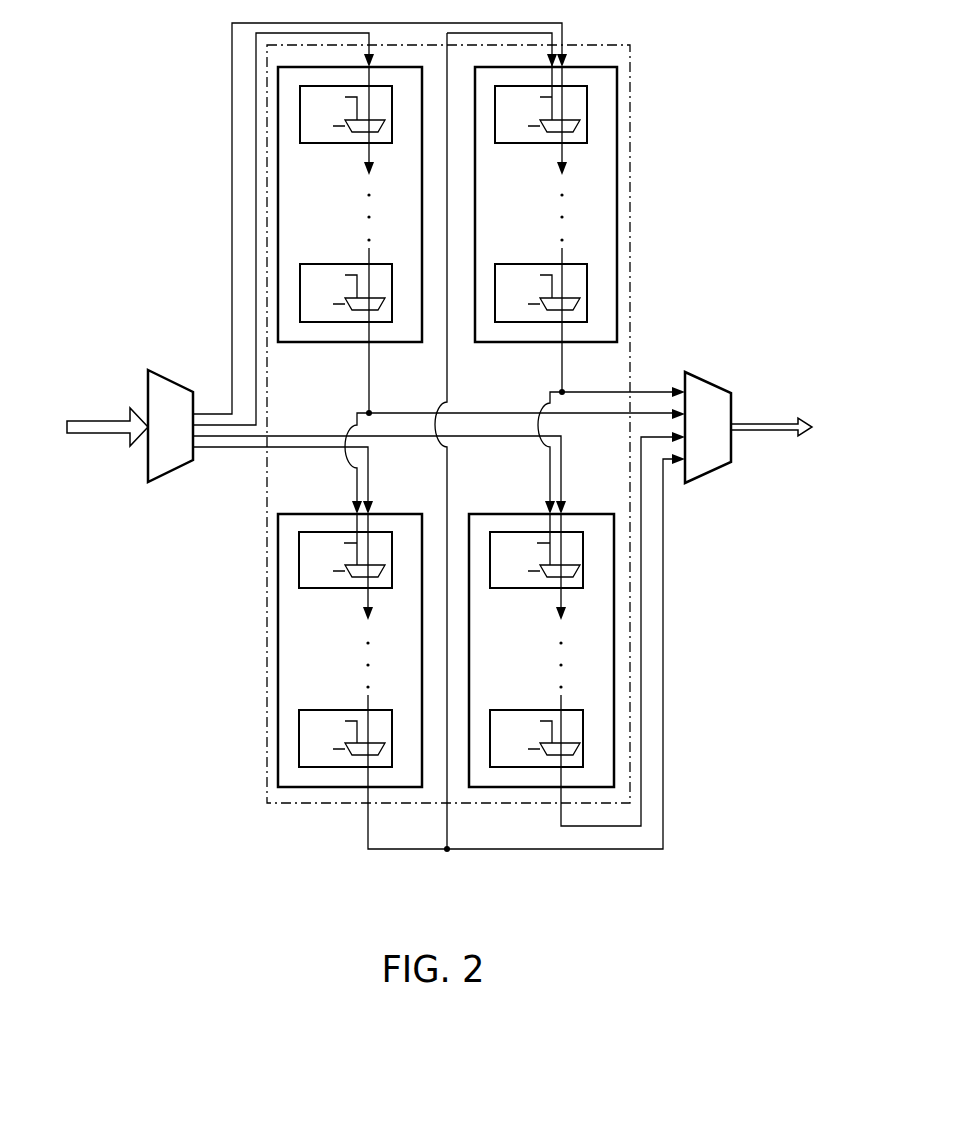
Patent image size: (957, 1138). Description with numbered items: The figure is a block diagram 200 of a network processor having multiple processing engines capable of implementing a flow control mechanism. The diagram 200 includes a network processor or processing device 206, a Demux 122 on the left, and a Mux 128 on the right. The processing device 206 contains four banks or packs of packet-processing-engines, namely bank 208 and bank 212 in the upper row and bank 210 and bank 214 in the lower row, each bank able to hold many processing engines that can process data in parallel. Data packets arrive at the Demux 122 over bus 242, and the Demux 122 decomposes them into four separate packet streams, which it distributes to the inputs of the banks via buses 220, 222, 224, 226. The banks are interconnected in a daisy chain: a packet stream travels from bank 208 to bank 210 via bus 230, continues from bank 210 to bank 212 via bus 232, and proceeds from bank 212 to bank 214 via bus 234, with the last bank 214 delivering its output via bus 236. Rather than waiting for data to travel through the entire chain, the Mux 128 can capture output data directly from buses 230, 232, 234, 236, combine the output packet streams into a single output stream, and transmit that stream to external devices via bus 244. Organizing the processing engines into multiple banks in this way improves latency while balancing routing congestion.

The block diagram 200 is at (781, 84).
The processing device 206 is at (631, 228).
The bank 208 is at (278, 178).
The bank 212 is at (617, 157).
The bank 210 is at (278, 613).
The bank 214 is at (614, 632).
The Demux 122 is at (167, 379).
The Mux 128 is at (710, 411).
The bus 242 is at (97, 425).
The bus 244 is at (790, 432).
The bus 220 is at (232, 192).
The bus 222 is at (256, 302).
The bus 224 is at (255, 450).
The bus 226 is at (334, 435).
The bus 230 is at (370, 388).
The bus 234 is at (560, 385).
The bus 232 is at (450, 494).
The bus 236 is at (641, 757).